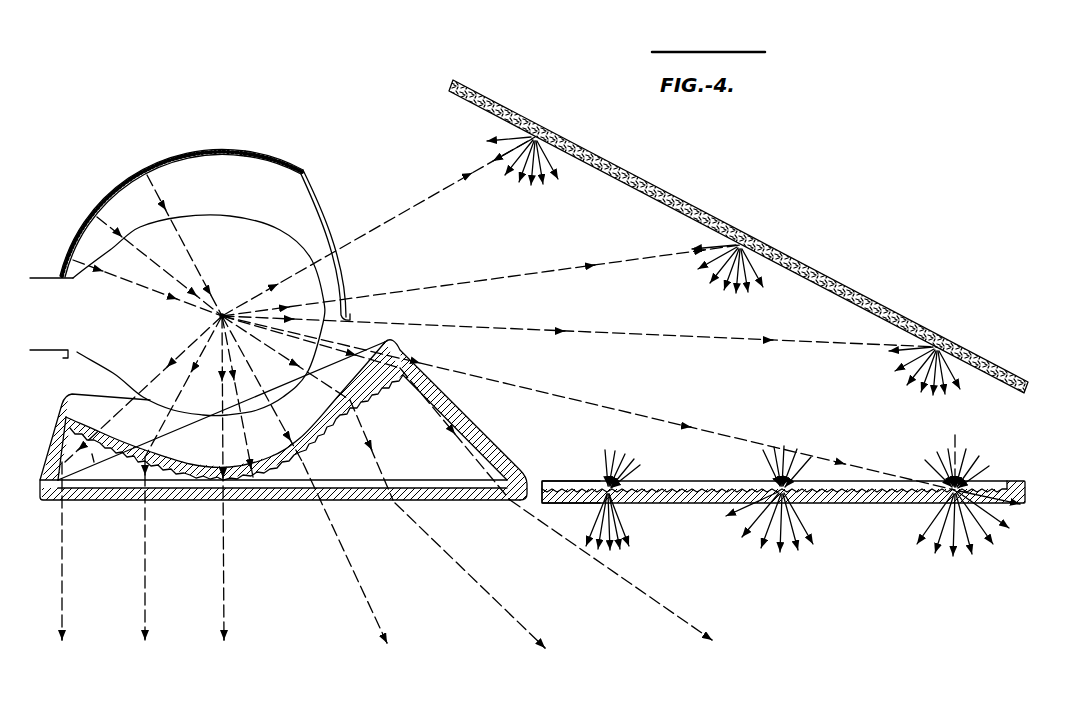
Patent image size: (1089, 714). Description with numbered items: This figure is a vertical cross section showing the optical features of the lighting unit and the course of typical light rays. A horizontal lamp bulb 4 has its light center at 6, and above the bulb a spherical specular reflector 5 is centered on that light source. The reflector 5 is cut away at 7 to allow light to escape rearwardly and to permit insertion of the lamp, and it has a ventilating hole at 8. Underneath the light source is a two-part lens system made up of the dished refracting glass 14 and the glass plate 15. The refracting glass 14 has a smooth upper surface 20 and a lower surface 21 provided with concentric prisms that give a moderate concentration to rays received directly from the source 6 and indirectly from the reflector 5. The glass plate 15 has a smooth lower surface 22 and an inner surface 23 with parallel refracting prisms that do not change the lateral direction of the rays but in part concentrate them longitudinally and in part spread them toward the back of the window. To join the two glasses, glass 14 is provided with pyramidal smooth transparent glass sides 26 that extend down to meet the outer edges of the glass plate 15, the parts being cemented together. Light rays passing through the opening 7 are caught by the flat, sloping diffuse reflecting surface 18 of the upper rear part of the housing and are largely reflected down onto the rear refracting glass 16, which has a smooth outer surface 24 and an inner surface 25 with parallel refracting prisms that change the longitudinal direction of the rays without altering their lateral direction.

The lamp bulb 4 is at (243, 217).
The spherical specular reflector 5 is at (284, 158).
The light center 6 is at (216, 318).
The cut-away opening 7 is at (313, 220).
The ventilating hole 8 is at (203, 150).
The refracting glass 14 is at (497, 448).
The glass plate 15 is at (463, 498).
The refracting plate 16 is at (659, 503).
The diffuse reflecting surface 18 is at (656, 184).
The smooth upper surface 20 is at (212, 464).
The lower surface 21 is at (104, 463).
The smooth lower surface 22 is at (366, 500).
The inner surface 23 is at (337, 487).
The smooth outer surface 24 is at (864, 503).
The inner surface 25 is at (857, 489).
The pyramidal smooth transparent glass sides 26 is at (56, 432).